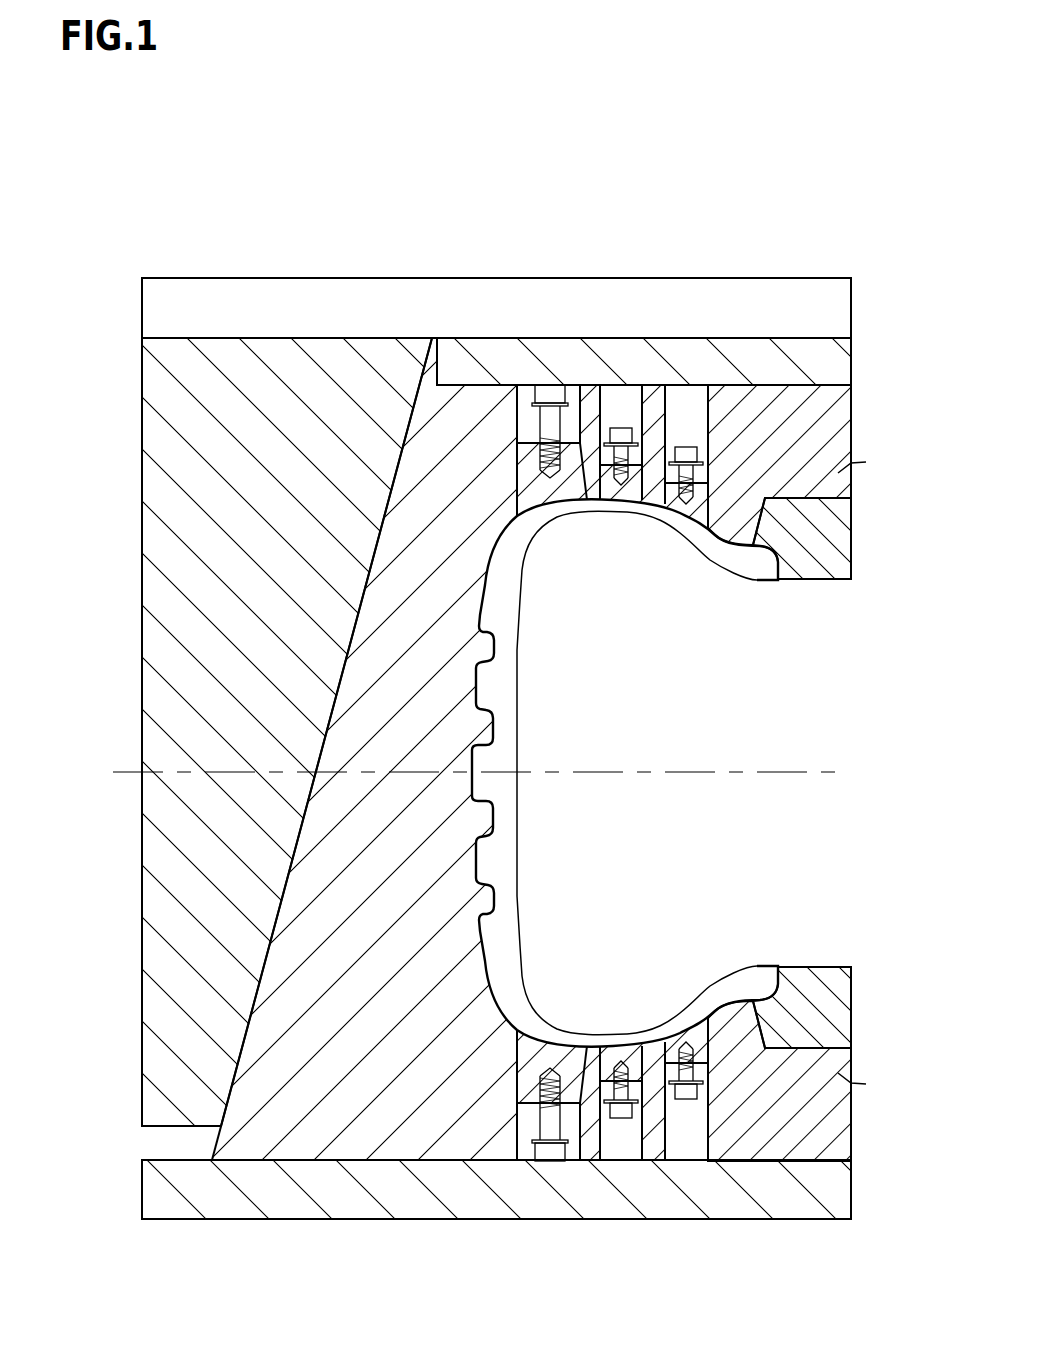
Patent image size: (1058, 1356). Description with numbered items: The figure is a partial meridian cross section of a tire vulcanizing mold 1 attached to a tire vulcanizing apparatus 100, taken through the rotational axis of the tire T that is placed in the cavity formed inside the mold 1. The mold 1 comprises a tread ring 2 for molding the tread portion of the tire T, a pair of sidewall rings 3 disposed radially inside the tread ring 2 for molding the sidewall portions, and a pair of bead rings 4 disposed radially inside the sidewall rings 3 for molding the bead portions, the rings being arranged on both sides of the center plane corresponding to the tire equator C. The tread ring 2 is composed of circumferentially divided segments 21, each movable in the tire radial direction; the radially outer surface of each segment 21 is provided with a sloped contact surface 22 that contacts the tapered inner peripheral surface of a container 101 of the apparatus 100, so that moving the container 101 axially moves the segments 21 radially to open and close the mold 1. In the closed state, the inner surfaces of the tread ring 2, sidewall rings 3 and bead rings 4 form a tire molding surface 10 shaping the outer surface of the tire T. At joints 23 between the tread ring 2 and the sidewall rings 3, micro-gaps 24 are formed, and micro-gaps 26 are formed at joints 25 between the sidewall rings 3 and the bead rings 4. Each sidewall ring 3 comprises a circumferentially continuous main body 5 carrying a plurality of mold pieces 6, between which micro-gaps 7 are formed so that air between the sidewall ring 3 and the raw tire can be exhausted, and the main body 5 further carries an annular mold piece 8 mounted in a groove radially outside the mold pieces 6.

The tire vulcanizing apparatus 100 is at (758, 265).
The tire vulcanizing mold 1 is at (865, 388).
The container 101 is at (180, 665).
The tread ring 2 is at (370, 1010).
The segment 21 is at (305, 1000).
The sloped contact surface 22 is at (263, 957).
The sidewall ring 3 is at (584, 398).
The bead ring 4 is at (800, 540).
The main body 5 is at (727, 1127).
The mold piece 6 is at (630, 1050).
The micro-gap 7 is at (685, 1080).
The annular mold piece 8 is at (520, 1085).
The tire molding surface 10 is at (568, 507).
The joint 23 is at (580, 1103).
The micro-gap 24 is at (500, 1043).
The joint 25 is at (760, 1010).
The micro-gap 26 is at (763, 1033).
The tire T is at (503, 678).
The tire equator C is at (495, 775).